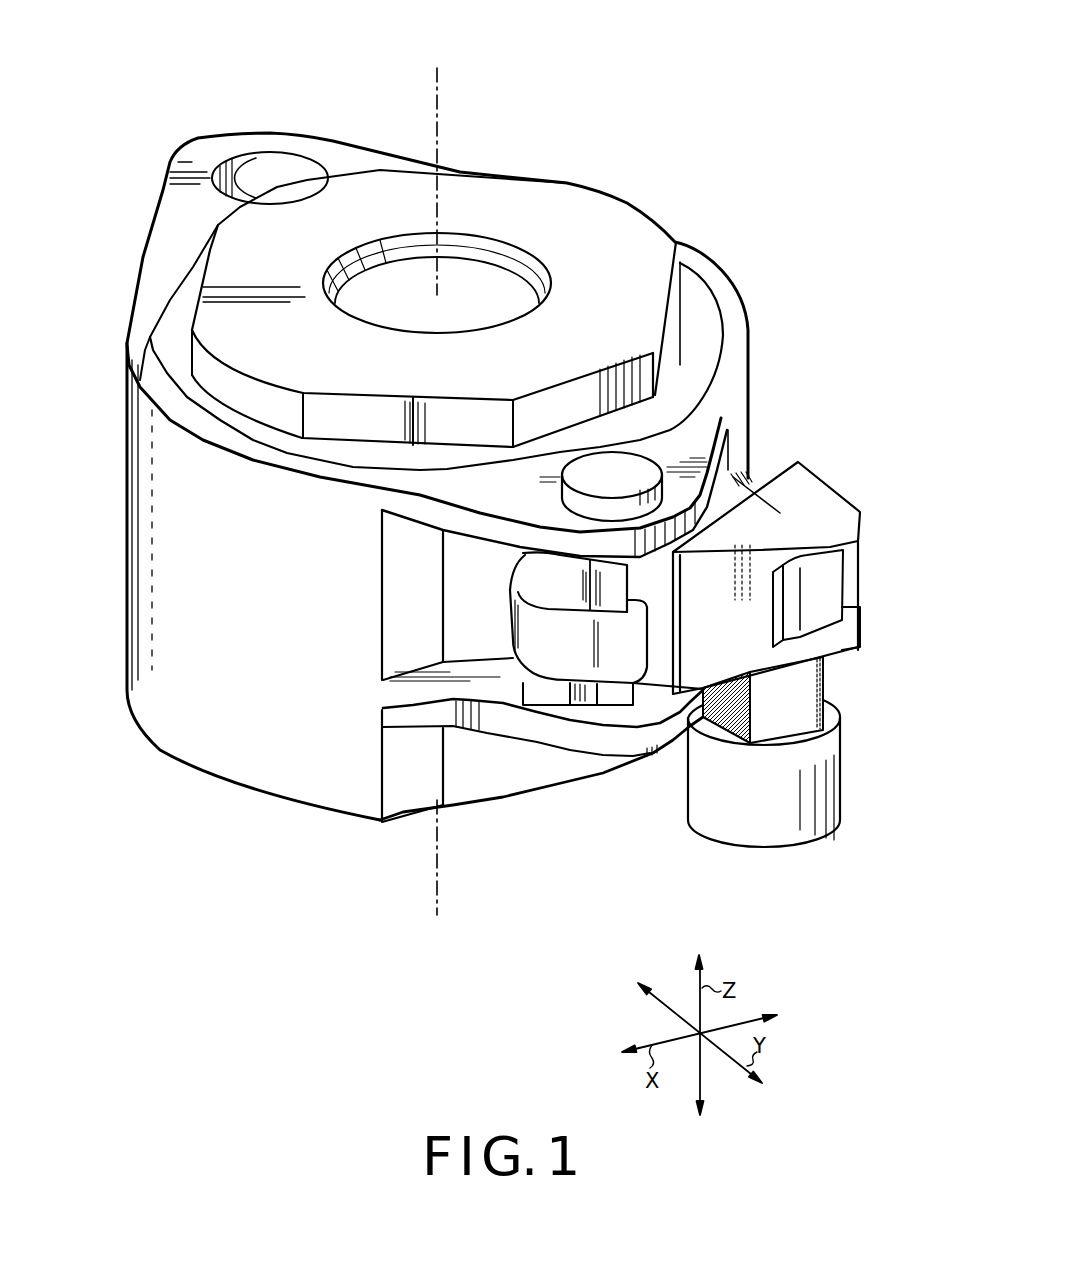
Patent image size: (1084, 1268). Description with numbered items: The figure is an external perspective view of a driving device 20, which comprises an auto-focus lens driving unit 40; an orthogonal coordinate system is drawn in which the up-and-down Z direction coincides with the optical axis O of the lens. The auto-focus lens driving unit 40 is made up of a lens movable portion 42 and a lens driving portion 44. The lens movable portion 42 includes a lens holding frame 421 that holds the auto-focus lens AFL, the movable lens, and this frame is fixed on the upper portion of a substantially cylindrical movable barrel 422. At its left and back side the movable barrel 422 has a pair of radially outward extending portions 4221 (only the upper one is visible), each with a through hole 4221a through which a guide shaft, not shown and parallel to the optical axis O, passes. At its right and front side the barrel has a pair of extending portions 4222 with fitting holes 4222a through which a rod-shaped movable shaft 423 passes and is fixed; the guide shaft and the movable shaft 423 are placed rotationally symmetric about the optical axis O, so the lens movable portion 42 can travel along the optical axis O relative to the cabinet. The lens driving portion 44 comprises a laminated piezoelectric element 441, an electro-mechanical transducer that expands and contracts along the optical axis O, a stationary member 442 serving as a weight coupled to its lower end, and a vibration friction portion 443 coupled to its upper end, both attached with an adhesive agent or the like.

The driving device 20 is at (739, 105).
The auto-focus lens driving unit 40 is at (775, 338).
The lens movable portion 42 is at (693, 250).
The lens holding frame 421 is at (613, 227).
The extending portion 4221 is at (168, 220).
The through hole 4221a is at (243, 158).
The movable barrel 422 is at (150, 546).
The extending portion 4222 is at (683, 450).
The fitting hole 4222a is at (690, 483).
The movable shaft 423 is at (647, 697).
The lens driving portion 44 is at (860, 520).
The laminated piezoelectric element 441 is at (813, 688).
The stationary member 442 is at (838, 808).
The vibration friction portion 443 is at (860, 625).
The auto-focus lens AFL is at (487, 277).
The optical axis O is at (440, 87).